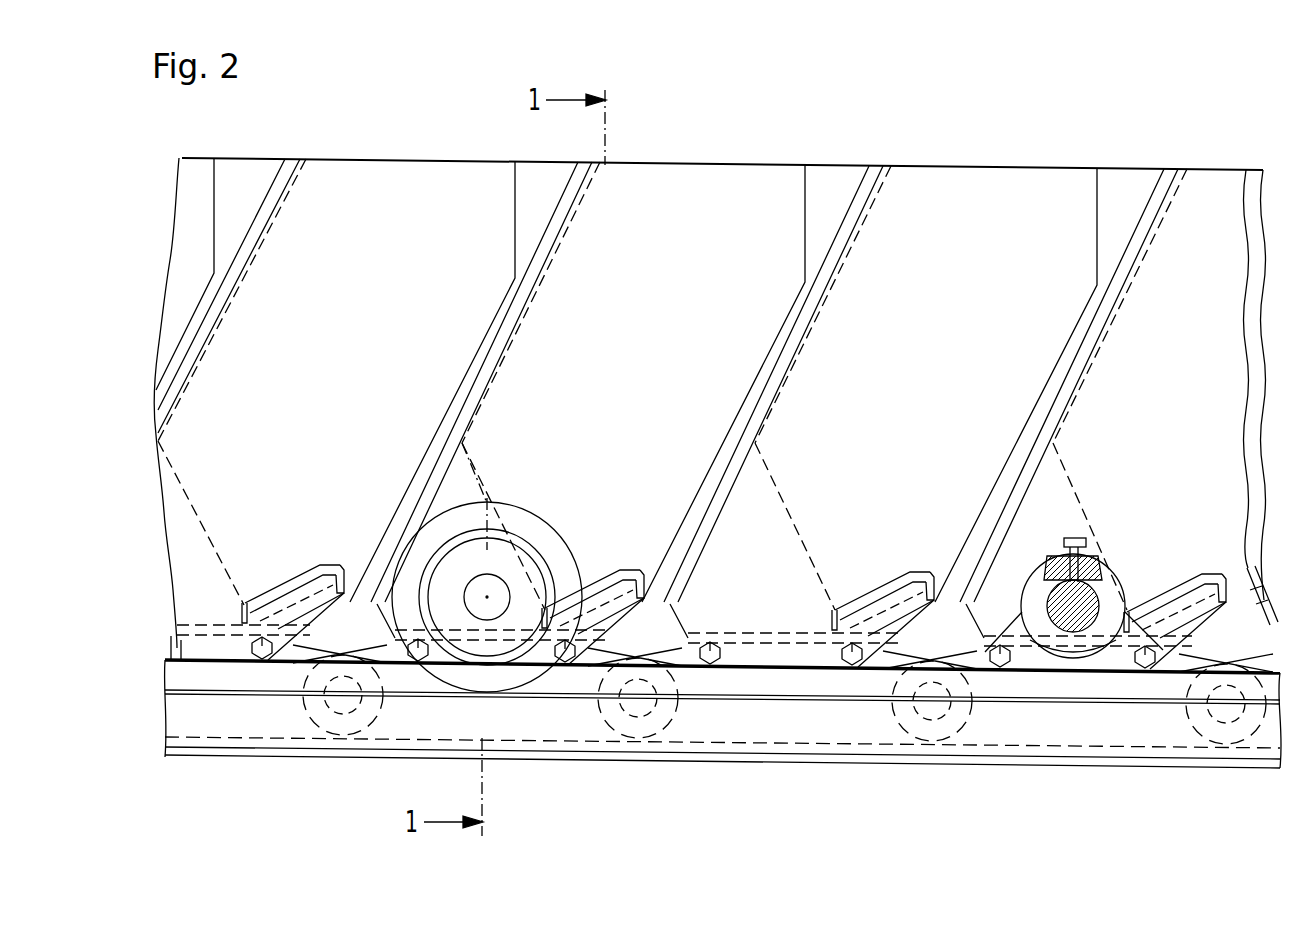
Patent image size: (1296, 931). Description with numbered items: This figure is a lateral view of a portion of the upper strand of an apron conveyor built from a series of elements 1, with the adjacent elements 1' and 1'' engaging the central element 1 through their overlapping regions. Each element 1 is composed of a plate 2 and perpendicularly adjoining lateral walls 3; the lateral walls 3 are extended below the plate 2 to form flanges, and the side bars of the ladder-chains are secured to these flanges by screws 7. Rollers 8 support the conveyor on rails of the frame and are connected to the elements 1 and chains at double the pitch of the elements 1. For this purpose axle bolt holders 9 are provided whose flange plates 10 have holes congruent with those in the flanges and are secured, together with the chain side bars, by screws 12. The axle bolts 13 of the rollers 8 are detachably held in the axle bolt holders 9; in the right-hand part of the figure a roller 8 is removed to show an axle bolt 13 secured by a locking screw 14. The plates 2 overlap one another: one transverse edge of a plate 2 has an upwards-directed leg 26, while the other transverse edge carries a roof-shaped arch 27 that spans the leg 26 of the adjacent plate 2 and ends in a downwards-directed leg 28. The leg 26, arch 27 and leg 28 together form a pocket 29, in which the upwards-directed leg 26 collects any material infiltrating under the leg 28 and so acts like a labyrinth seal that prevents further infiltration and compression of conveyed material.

The element 1 is at (577, 329).
The adjacent element 1' is at (289, 358).
The adjacent element 1'' is at (1106, 342).
The plate 2 is at (486, 645).
The lateral wall 3 is at (401, 196).
The screw 7 is at (262, 662).
The roller 8 is at (532, 640).
The axle bolt holder 9 is at (1104, 578).
The flange plate 10 is at (1108, 658).
The screw 12 is at (418, 663).
The axle bolt 13 is at (1098, 600).
The locking screw 14 is at (1066, 540).
The upwards-directed leg 26 is at (920, 586).
The roof-shaped arch 27 is at (863, 597).
The downwards-directed leg 28 is at (830, 624).
The pocket 29 is at (887, 603).